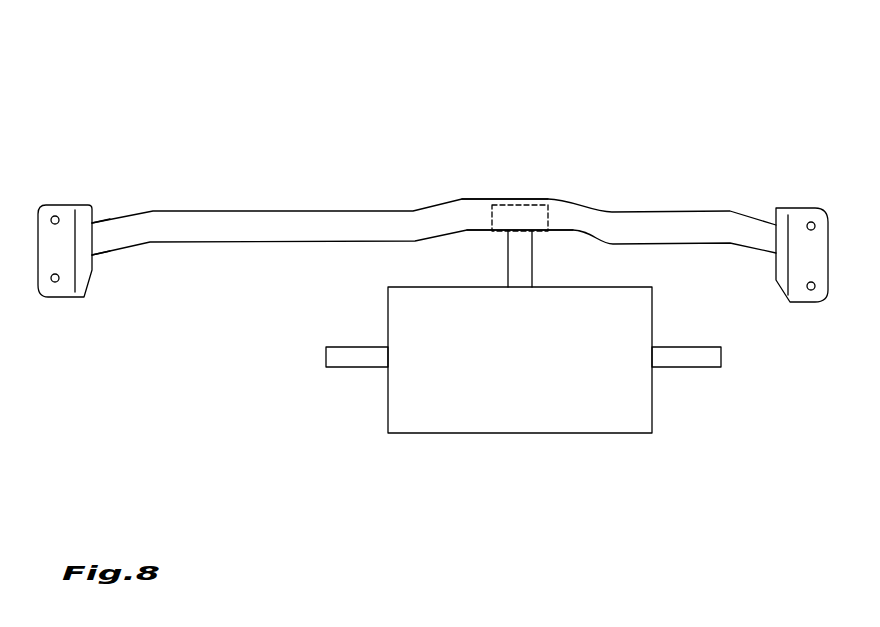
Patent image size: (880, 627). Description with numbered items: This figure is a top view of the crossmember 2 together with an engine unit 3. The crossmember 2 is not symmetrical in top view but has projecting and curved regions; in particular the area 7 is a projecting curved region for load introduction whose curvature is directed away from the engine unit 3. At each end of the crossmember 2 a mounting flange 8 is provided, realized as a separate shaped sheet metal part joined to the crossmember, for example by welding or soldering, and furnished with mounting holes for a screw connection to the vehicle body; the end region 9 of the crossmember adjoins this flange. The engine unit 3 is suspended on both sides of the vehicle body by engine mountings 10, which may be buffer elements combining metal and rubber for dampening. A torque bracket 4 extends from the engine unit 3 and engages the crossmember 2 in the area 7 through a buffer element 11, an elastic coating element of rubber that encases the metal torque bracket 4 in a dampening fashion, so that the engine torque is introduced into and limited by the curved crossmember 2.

The crossmember 2 is at (304, 233).
The engine unit 3 is at (473, 413).
The torque bracket 4 is at (513, 260).
The area 7 is at (601, 117).
The mounting flange 8 is at (67, 208).
The bar end / bushing 9 is at (92, 217).
The engine mounting 10 is at (350, 353).
The buffer element 11 is at (513, 219).